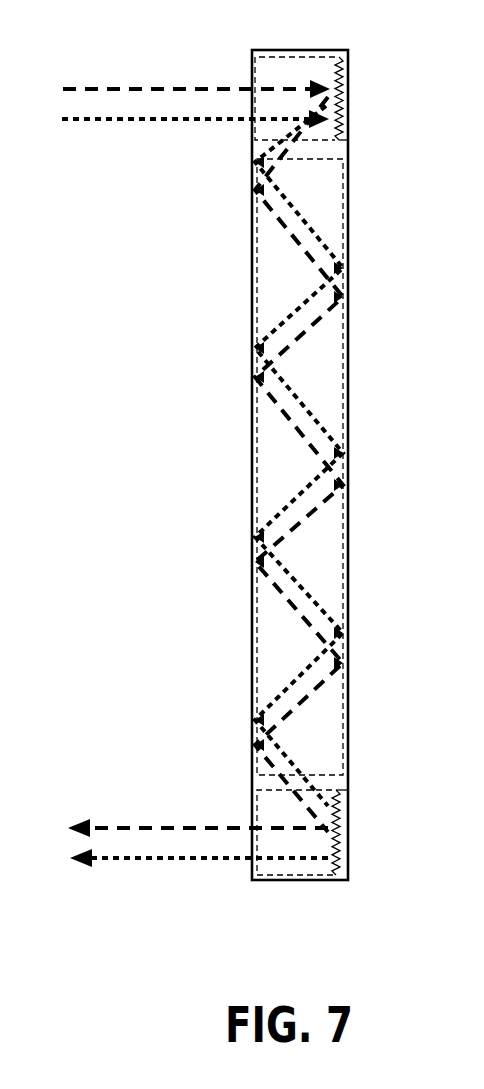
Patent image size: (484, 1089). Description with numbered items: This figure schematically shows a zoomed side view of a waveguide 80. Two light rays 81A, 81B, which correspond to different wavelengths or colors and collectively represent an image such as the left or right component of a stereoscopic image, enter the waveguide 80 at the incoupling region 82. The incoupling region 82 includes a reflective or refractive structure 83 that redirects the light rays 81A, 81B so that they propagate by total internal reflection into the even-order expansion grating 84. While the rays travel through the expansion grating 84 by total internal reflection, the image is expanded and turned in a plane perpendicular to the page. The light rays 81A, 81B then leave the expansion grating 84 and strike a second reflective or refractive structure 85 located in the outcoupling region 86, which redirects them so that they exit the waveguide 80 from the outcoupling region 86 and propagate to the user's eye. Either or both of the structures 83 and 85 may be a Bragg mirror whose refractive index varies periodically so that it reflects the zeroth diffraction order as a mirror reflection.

The waveguide 80 is at (322, 50).
The light ray 81A is at (130, 88).
The light ray 81B is at (124, 119).
The incoupling region 82 is at (272, 57).
The reflective or refractive structure 83 is at (343, 84).
The expansion grating 84 is at (346, 206).
The reflective or refractive structure 85 is at (342, 808).
The outcoupling region 86 is at (318, 880).